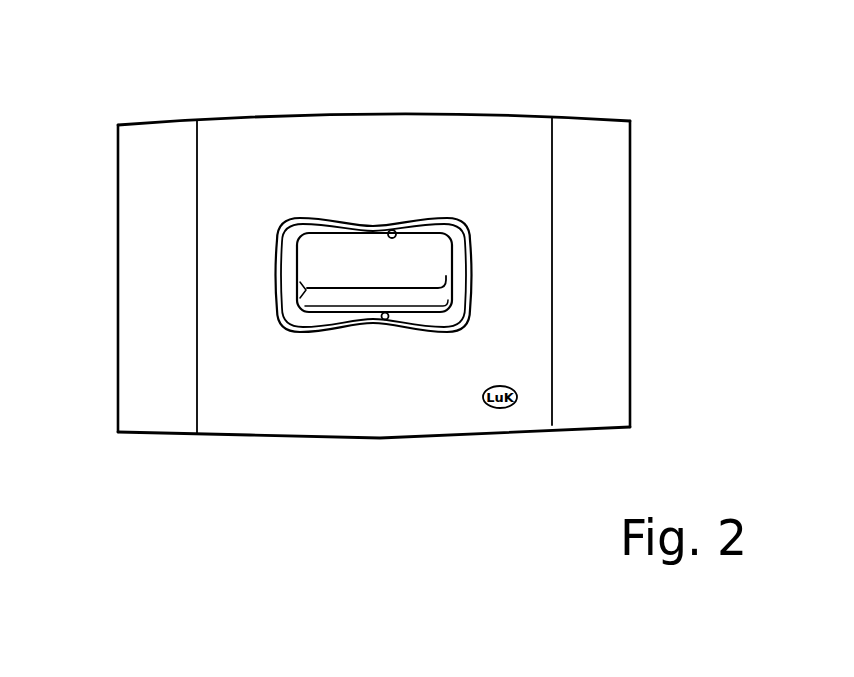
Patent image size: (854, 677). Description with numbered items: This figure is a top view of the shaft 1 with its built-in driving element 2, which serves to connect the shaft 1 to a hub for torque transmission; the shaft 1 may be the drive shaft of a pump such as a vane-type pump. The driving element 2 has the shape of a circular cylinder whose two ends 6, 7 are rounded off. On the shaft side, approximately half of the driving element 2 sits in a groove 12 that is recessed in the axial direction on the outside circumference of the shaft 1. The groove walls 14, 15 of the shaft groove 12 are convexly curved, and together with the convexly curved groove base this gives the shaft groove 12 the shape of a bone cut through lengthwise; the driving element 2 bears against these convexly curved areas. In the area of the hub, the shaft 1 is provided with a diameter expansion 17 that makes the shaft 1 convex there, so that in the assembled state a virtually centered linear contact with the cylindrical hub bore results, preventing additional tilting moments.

The shaft 1 is at (500, 143).
The driving element 2 is at (391, 280).
The end of driving element 6 is at (298, 303).
The end of driving element 7 is at (440, 263).
The shaft groove 12 is at (285, 266).
The groove wall 14 is at (386, 319).
The groove wall 15 is at (396, 230).
The diameter expansion 17 is at (312, 116).